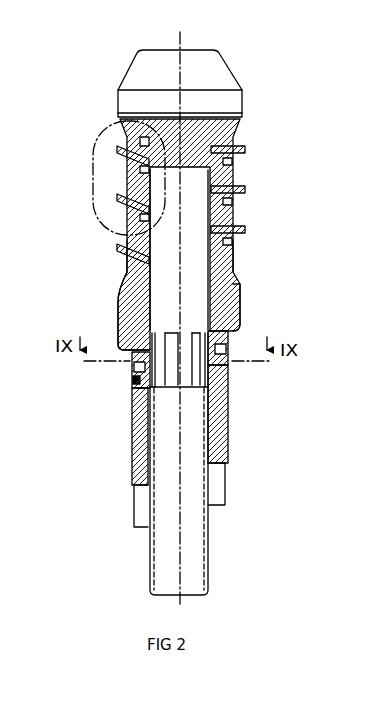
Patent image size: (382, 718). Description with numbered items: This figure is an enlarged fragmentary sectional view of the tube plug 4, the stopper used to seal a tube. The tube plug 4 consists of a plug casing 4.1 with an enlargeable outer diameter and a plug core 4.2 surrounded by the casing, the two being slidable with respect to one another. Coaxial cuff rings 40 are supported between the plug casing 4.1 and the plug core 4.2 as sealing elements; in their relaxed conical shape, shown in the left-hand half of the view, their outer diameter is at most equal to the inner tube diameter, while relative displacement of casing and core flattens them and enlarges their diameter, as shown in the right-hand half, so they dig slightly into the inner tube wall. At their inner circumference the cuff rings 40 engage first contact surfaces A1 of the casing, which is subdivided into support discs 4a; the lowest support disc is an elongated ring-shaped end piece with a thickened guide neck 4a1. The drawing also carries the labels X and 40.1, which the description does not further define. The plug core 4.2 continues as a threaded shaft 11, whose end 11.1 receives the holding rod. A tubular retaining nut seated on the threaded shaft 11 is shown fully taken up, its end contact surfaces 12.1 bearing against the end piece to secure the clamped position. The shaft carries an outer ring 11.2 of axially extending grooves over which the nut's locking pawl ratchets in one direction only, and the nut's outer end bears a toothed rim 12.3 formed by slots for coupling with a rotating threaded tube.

The tube plug 4 is at (167, 44).
The plug casing 4.1 is at (246, 194).
The upper thread fin 40.1 is at (246, 148).
The cuff rings 40 is at (246, 229).
The detail region X is at (92, 143).
The first contact surfaces A1 is at (234, 251).
The plug core 4.2 is at (236, 291).
The end contact surfaces 12.1 is at (238, 314).
The support discs 4a is at (125, 300).
The thickened guide neck 4a1 is at (120, 322).
The outer ring of axially extending grooves 11.2 is at (185, 390).
The threaded shaft 11 is at (168, 539).
The toothed rim 12.3 is at (219, 481).
The end of the threaded shaft 11.1 is at (210, 558).